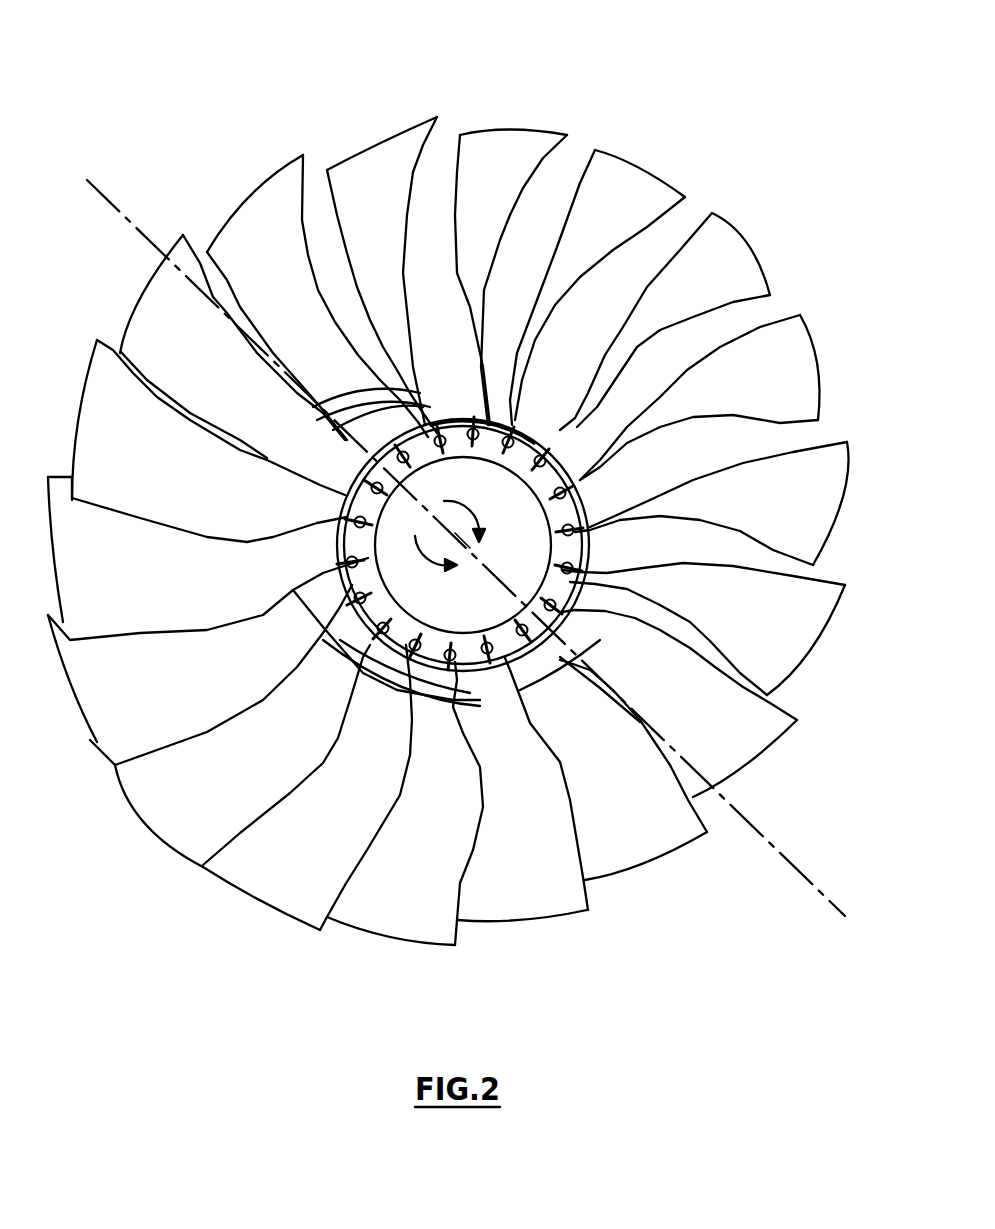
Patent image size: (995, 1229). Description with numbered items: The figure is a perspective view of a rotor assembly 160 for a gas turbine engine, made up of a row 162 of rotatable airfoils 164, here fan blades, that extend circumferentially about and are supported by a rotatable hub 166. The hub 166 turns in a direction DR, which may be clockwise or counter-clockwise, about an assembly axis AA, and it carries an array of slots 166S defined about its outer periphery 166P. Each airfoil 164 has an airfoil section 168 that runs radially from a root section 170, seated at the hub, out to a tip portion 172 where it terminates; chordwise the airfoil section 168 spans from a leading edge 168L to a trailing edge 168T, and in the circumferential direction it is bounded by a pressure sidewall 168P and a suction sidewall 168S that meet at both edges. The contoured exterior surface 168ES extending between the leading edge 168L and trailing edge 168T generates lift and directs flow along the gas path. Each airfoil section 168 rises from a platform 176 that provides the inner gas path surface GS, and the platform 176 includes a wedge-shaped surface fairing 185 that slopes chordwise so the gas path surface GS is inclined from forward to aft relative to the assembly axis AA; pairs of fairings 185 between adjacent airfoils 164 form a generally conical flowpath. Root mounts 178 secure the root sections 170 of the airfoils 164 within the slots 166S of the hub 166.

The rotor assembly 160 is at (120, 73).
The row of rotatable airfoils 162 is at (216, 140).
The airfoil 164 is at (413, 140).
The hub 166 is at (572, 552).
The slot 166S is at (460, 650).
The outer periphery 166P is at (414, 762).
The airfoil section 168 is at (390, 257).
The exterior surface 168ES is at (353, 198).
The suction sidewall 168S is at (547, 145).
The trailing edge 168T is at (520, 177).
The leading edge 168L is at (452, 277).
The pressure sidewall 168P is at (450, 345).
The root section 170 is at (470, 437).
The tip portion 172 is at (363, 162).
The platform 176 is at (388, 368).
The root mount 178 is at (350, 517).
The surface fairing 185 is at (400, 447).
The direction of rotation DR is at (458, 500).
The gas path surface GS is at (523, 368).
The assembly axis AA is at (783, 852).